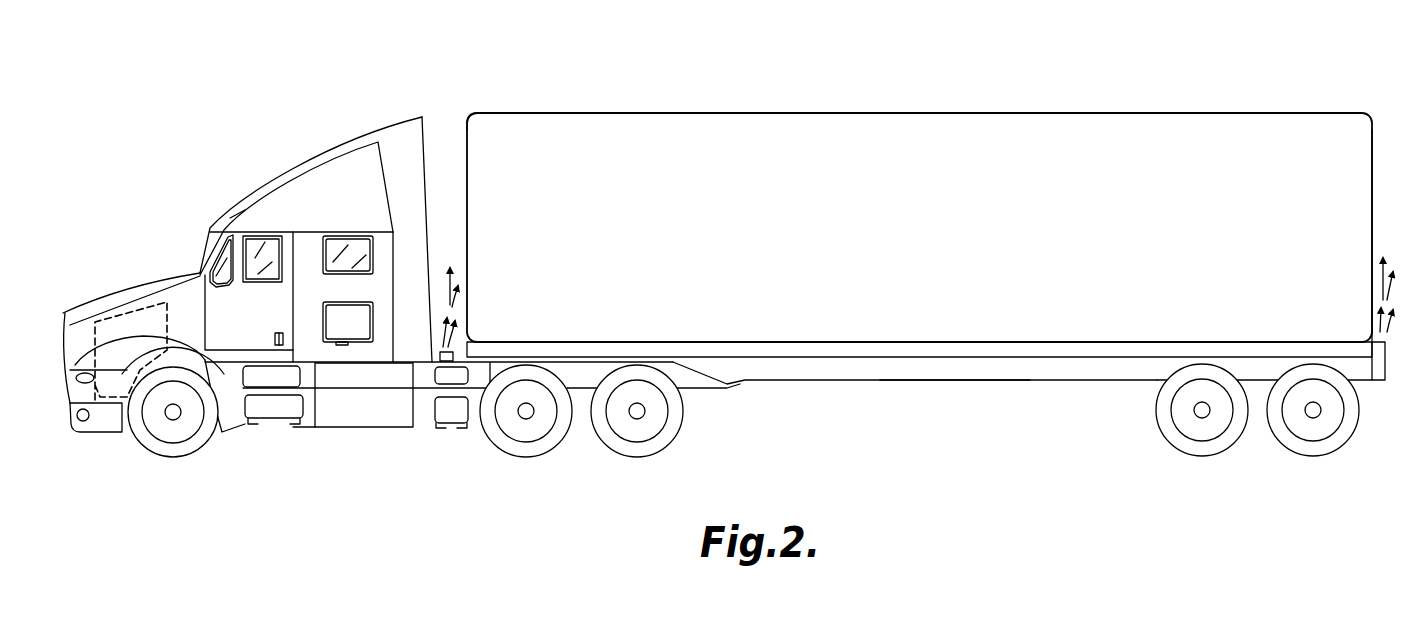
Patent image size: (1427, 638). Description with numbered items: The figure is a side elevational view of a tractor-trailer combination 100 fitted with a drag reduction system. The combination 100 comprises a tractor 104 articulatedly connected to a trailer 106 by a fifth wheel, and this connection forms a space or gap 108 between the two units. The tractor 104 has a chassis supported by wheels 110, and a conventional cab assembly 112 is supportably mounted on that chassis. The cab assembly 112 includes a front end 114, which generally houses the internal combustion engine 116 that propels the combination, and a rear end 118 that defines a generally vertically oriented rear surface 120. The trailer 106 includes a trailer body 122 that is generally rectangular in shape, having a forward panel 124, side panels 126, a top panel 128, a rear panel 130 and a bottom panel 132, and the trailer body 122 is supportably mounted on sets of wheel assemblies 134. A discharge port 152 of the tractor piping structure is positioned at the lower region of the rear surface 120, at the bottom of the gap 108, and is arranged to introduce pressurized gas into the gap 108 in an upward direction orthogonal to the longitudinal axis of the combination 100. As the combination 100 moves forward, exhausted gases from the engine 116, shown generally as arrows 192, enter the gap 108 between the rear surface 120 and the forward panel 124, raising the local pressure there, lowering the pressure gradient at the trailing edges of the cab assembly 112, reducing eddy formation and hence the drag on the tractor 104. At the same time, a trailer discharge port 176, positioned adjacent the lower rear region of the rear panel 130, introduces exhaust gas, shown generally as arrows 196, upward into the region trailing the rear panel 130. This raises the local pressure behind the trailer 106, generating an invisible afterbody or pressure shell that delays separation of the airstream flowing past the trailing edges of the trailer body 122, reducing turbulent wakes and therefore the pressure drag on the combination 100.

The tractor-trailer combination 100 is at (141, 176).
The tractor 104 is at (164, 242).
The trailer 106 is at (635, 104).
The gap 108 is at (462, 183).
The wheels 110 is at (195, 457).
The cab assembly 112 is at (310, 156).
The front end 114 is at (71, 312).
The internal combustion engine 116 is at (95, 400).
The rear end 118 is at (402, 137).
The rear surface 120 is at (427, 143).
The trailer body 122 is at (685, 112).
The forward panel 124 is at (467, 122).
The side panels 126 is at (810, 112).
The top panel 128 is at (985, 112).
The rear panel 130 is at (1372, 143).
The bottom panel 132 is at (955, 381).
The wheel assemblies 134 is at (1180, 452).
The discharge port 152 is at (440, 356).
The trailer discharge port 176 is at (1390, 364).
The arrows representing exhausted gases 192 is at (455, 302).
The arrows representing exhaust gases 196 is at (1388, 322).